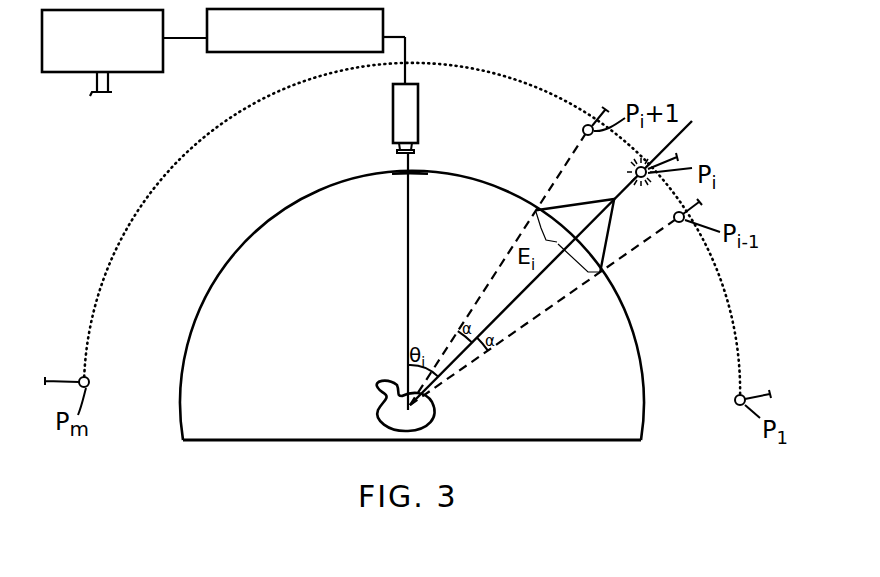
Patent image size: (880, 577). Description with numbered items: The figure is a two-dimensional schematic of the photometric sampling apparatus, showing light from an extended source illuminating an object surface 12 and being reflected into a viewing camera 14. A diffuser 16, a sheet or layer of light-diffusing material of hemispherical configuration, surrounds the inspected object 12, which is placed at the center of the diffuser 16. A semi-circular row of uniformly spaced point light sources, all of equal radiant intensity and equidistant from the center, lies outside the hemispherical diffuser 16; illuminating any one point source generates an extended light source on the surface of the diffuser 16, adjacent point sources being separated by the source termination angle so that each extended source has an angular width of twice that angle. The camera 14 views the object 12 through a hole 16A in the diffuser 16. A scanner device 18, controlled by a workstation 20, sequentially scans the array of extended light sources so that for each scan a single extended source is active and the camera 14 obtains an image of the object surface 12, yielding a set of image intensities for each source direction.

The object surface 12 is at (425, 430).
The camera 14 is at (418, 107).
The diffuser 16 is at (181, 426).
The hole 16A is at (411, 177).
The scanner device 18 is at (134, 72).
The workstation 20 is at (268, 52).